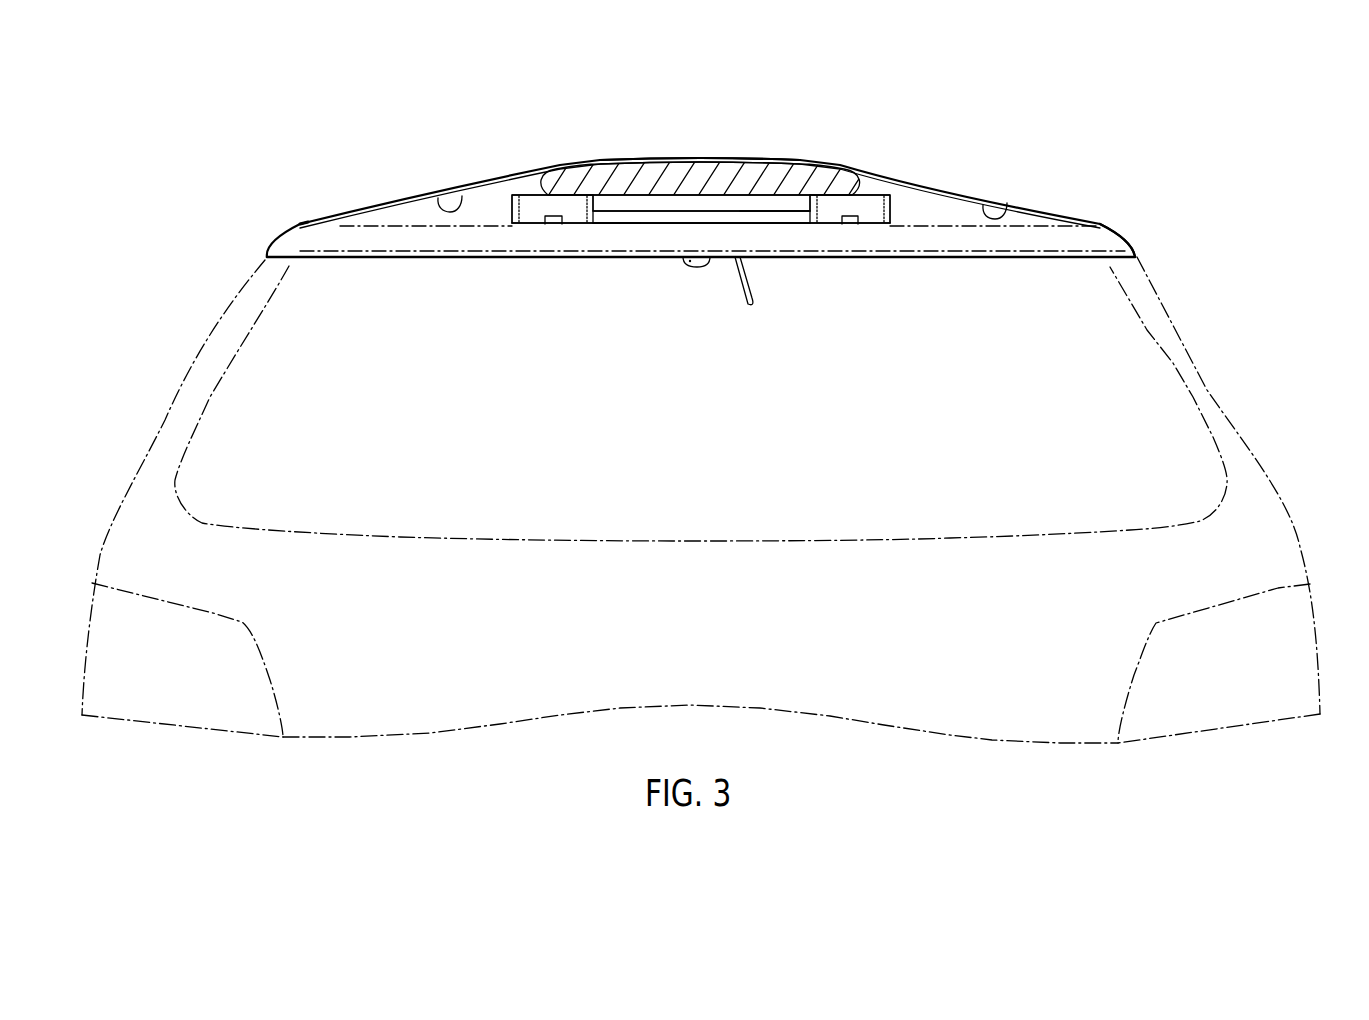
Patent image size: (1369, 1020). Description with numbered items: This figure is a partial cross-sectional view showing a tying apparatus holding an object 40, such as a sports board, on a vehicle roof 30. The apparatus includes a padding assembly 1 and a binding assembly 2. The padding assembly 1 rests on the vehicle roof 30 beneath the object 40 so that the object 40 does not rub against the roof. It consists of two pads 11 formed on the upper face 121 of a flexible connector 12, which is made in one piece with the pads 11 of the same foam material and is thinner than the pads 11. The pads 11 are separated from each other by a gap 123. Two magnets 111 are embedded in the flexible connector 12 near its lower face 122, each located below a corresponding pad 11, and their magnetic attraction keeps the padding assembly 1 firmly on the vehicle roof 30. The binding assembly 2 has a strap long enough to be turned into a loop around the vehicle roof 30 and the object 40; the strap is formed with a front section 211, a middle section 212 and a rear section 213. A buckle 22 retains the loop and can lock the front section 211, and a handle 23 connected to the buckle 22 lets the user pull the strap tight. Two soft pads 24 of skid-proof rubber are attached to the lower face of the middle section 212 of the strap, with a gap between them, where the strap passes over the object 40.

The padding assembly 1 is at (902, 205).
The binding assembly 2 is at (582, 153).
The pad 11 is at (535, 205).
The flexible connector 12 is at (793, 217).
The buckle 22 is at (700, 267).
The handle 23 is at (752, 306).
The soft pad 24 is at (437, 203).
The vehicle roof 30 is at (378, 225).
The object 40 is at (733, 168).
The magnet 111 is at (545, 218).
The upper face 121 is at (768, 208).
The lower face 122 is at (607, 222).
The gap 123 is at (640, 200).
The front section 211 is at (1117, 233).
The middle section 212 is at (818, 160).
The rear section 213 is at (357, 258).